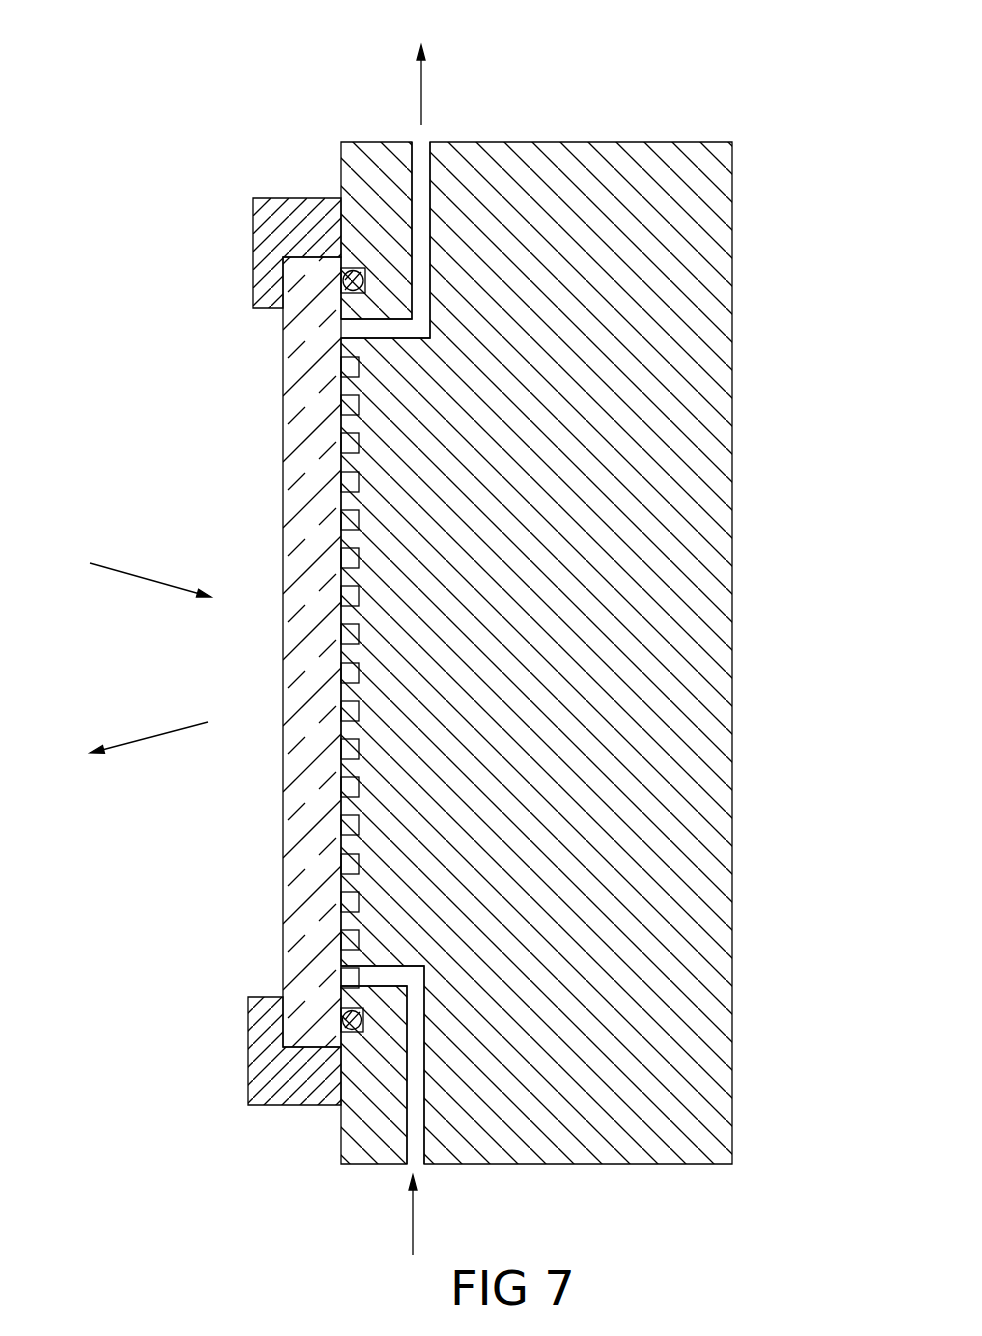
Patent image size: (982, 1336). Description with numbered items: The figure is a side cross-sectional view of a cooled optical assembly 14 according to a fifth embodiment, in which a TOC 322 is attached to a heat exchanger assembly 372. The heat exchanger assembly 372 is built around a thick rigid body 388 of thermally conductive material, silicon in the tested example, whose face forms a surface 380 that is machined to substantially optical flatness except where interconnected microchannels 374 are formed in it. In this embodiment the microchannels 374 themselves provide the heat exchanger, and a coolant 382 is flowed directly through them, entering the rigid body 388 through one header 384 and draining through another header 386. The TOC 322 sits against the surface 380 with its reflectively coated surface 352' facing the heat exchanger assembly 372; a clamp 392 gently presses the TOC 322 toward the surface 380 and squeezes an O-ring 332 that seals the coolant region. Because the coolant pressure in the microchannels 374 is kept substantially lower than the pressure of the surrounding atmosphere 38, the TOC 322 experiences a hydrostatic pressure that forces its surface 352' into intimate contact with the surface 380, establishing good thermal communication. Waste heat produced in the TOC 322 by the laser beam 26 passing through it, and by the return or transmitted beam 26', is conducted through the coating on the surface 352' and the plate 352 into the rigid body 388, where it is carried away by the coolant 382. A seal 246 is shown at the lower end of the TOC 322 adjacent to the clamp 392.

The cooled optical assembly 14 is at (458, 635).
The atmosphere 38 is at (193, 192).
The laser beam 26 is at (146, 553).
The reverse gas flow direction 26' is at (143, 773).
The TOC 322 is at (283, 380).
The plate 352 is at (250, 645).
The surface 352' is at (268, 484).
The microchannels 374 is at (355, 825).
The heat exchanger assembly 372 is at (534, 658).
The surface 380 is at (343, 165).
The coolant 382 is at (423, 91).
The header 384 is at (428, 1113).
The header 386 is at (430, 168).
The rigid body 388 is at (722, 655).
The O-ring 332 is at (341, 1010).
The seal 246 is at (350, 1036).
The clamp 392 is at (248, 1045).